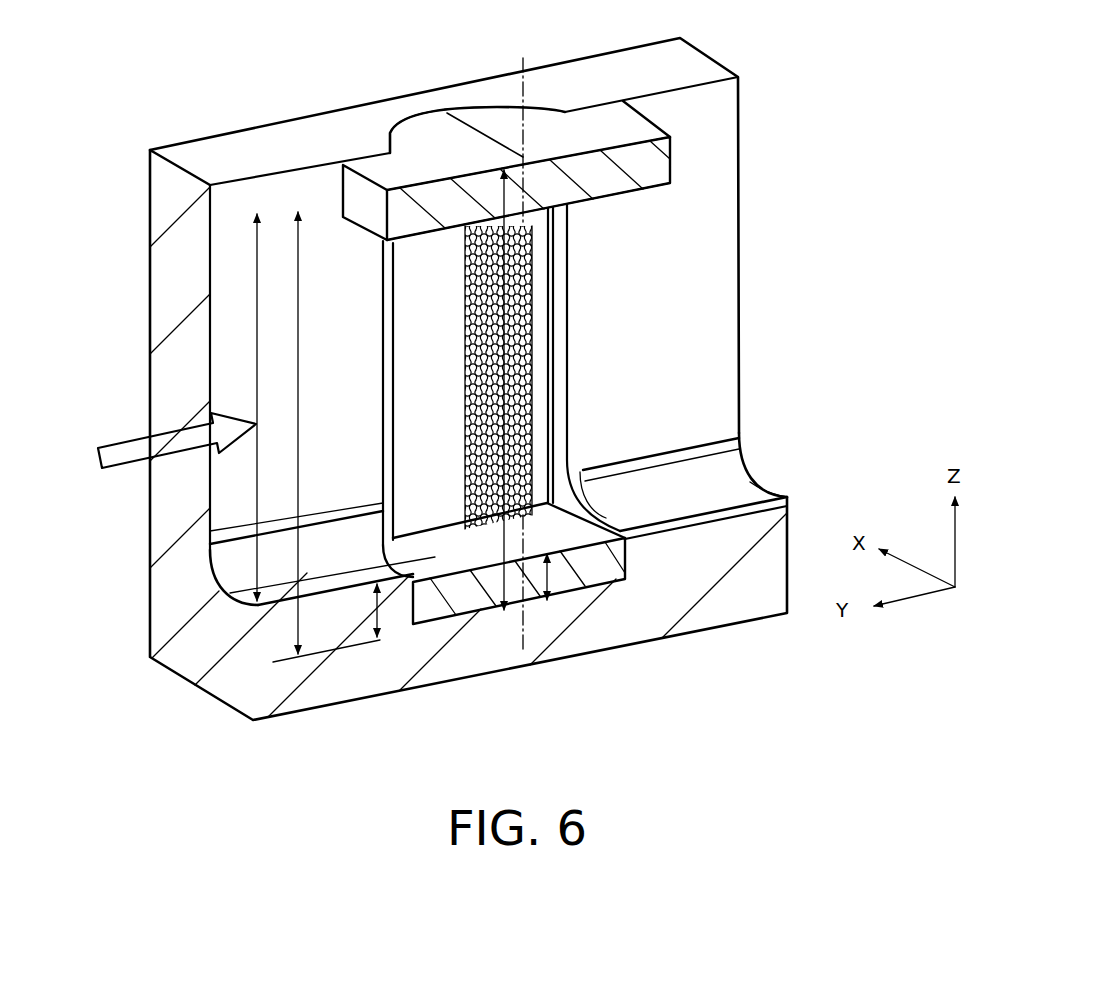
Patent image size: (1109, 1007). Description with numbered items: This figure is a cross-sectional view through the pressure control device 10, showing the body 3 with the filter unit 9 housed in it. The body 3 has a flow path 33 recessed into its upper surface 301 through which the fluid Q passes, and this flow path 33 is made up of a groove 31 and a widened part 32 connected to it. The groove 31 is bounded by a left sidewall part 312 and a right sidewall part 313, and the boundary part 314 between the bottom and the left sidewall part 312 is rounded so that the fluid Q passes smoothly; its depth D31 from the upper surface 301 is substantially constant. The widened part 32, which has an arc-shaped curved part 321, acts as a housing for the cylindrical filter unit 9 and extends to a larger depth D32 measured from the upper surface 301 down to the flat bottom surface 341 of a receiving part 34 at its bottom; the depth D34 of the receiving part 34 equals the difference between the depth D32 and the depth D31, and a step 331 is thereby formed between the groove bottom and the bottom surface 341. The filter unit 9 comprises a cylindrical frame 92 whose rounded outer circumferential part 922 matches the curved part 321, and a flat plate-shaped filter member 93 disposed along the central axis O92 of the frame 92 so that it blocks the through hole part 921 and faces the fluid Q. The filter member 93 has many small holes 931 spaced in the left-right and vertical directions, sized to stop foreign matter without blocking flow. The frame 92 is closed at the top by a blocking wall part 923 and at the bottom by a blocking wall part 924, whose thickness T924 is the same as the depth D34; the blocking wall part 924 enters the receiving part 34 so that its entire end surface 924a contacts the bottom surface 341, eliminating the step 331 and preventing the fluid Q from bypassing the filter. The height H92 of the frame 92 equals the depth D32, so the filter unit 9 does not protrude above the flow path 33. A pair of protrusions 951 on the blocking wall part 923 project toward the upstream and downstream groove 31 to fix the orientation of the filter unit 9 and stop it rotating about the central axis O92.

The pressure control device 10 is at (812, 52).
The body 3 is at (724, 59).
The upper surface 301 is at (205, 162).
The flow path 33 is at (363, 72).
The groove 31 is at (326, 156).
The widened part 32 is at (391, 129).
The curved part 321 is at (421, 134).
The sidewall part 312 is at (250, 333).
The sidewall part 313 is at (330, 562).
The boundary part 314 is at (228, 598).
The receiving part 34 is at (636, 562).
The bottom surface 341 is at (628, 578).
The step 331 is at (742, 440).
The filter unit 9 is at (818, 203).
The frame 92 is at (676, 170).
The through hole part 921 is at (542, 352).
The outer circumferential part 922 is at (530, 106).
The blocking wall part 923 is at (565, 160).
The blocking wall part 924 is at (565, 590).
The end surface 924a is at (470, 600).
The filter member 93 is at (545, 266).
The small holes 931 is at (470, 286).
The protrusions 951 is at (658, 158).
The central axis O92 is at (518, 148).
The height H92 is at (466, 449).
The depth D31 is at (215, 533).
The depth D32 is at (296, 657).
The depth D34 is at (365, 600).
The thickness T924 is at (548, 602).
The fluid Q is at (137, 447).